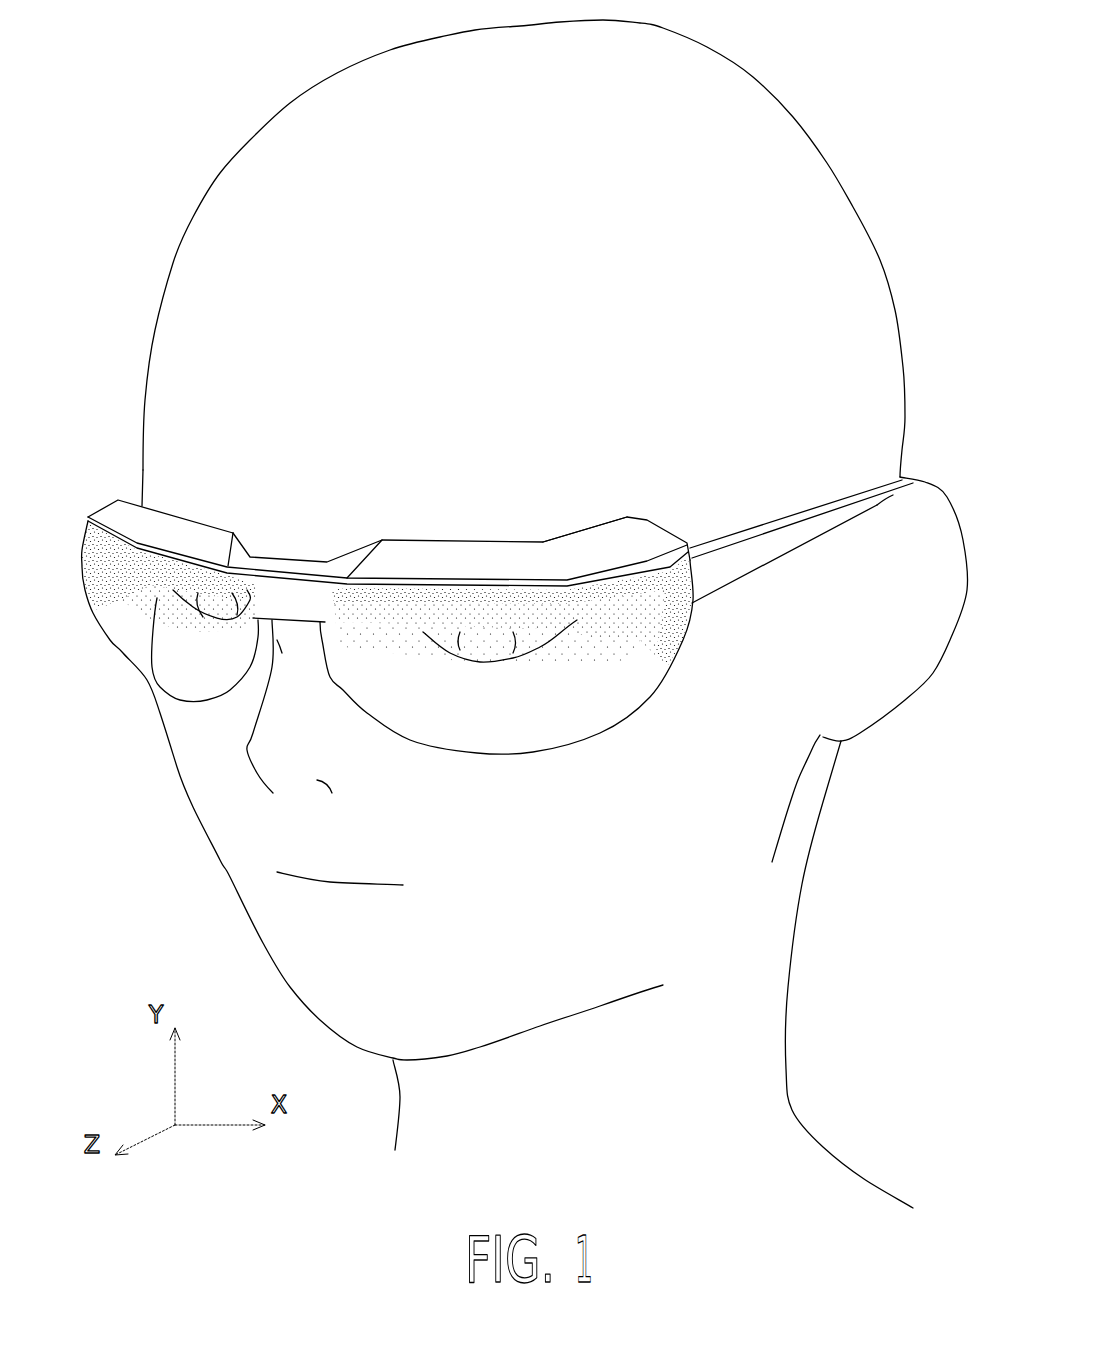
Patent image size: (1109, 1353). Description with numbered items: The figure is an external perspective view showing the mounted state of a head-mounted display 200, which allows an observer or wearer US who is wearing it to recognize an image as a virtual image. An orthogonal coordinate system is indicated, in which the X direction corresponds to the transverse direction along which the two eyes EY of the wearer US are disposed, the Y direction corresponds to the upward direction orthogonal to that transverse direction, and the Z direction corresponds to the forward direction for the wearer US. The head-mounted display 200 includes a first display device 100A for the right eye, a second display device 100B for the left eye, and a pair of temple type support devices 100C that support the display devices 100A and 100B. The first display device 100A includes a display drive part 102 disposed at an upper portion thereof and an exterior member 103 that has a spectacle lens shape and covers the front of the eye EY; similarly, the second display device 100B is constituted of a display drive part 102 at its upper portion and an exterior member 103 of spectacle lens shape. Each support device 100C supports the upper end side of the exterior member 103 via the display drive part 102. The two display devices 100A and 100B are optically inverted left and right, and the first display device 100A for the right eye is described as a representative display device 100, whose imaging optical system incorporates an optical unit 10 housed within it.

The wearer US is at (878, 248).
The eye EY is at (173, 600).
The display device 100 is at (497, 613).
The first display device 100A is at (243, 510).
The second display device 100B is at (572, 510).
The temple type support device 100C is at (733, 563).
The optical unit 10 is at (389, 518).
The display drive part 102 is at (478, 560).
The exterior member 103 is at (205, 678).
The head-mounted display 200 is at (486, 434).